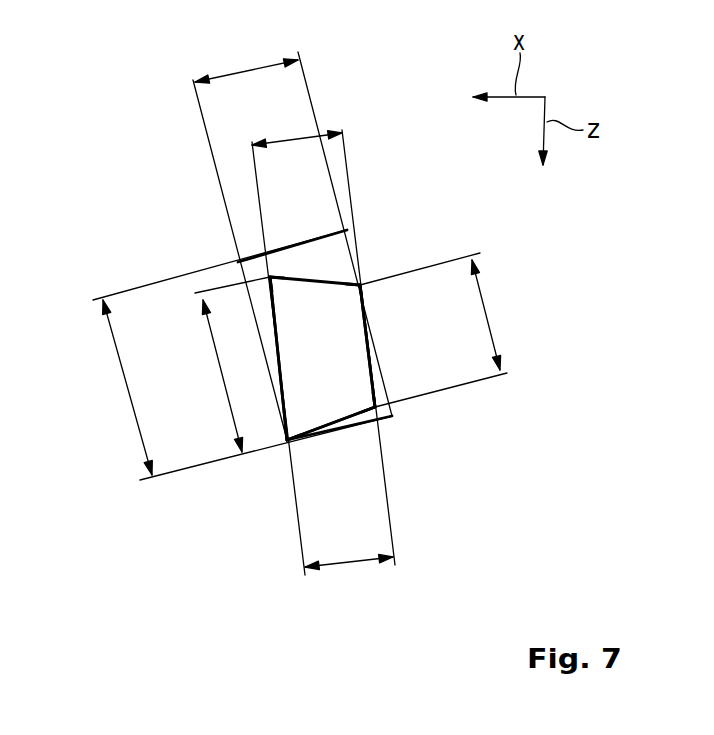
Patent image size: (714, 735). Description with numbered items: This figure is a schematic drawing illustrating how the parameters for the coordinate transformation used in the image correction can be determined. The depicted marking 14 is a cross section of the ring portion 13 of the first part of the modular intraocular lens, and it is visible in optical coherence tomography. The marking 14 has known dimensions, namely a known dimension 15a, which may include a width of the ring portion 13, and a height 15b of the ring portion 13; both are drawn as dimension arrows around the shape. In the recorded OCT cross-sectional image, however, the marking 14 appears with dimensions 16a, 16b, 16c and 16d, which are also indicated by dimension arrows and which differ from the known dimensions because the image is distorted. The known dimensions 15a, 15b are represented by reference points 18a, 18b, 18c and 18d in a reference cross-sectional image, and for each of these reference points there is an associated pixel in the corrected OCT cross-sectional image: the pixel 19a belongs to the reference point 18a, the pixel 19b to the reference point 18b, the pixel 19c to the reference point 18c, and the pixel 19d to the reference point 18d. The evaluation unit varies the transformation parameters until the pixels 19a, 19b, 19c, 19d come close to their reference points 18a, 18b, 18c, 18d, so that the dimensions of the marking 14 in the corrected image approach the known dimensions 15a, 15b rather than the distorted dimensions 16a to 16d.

The ring portion 13 is at (347, 338).
The marking 14 is at (353, 422).
The known dimension 15a is at (248, 72).
The height 15b is at (119, 362).
The dimension 16a is at (290, 138).
The dimension 16b is at (220, 374).
The dimension 16c is at (352, 565).
The dimension 16d is at (487, 315).
The reference point 18a is at (286, 446).
The reference point 18b is at (395, 414).
The reference point 18c is at (354, 229).
The reference point 18d is at (240, 261).
The pixel 19a is at (286, 443).
The pixel 19b is at (392, 417).
The pixel 19c is at (362, 282).
The pixel 19d is at (272, 274).